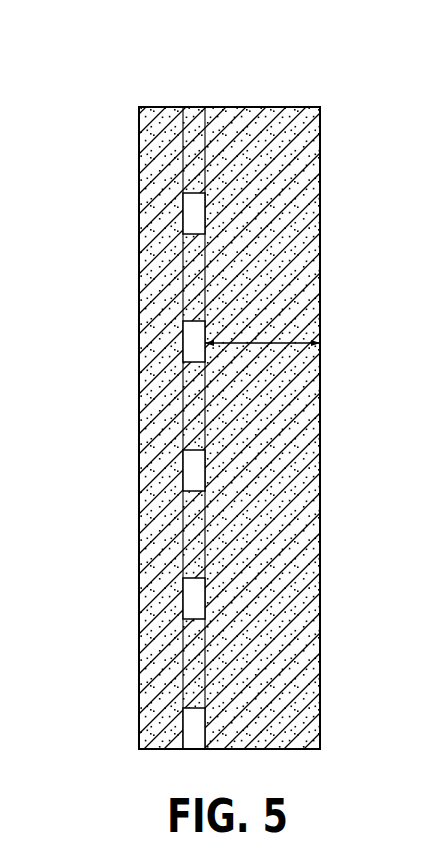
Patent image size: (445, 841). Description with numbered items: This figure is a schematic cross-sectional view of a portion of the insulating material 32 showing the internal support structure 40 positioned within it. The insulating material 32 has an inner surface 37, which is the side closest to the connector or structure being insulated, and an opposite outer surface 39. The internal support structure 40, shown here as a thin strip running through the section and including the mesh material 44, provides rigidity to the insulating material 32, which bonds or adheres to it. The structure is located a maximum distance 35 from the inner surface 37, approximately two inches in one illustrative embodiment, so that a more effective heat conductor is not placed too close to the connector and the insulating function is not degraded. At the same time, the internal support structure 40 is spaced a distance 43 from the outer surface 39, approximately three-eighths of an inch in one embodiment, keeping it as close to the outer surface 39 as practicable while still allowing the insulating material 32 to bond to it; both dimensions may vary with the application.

The internal support structure 40 is at (230, 391).
The insulating material 32 is at (230, 398).
The mesh material 44 is at (179, 398).
The distance 43 is at (183, 601).
The maximum distance 35 is at (268, 343).
The outer surface 39 is at (140, 488).
The inner surface 37 is at (322, 432).